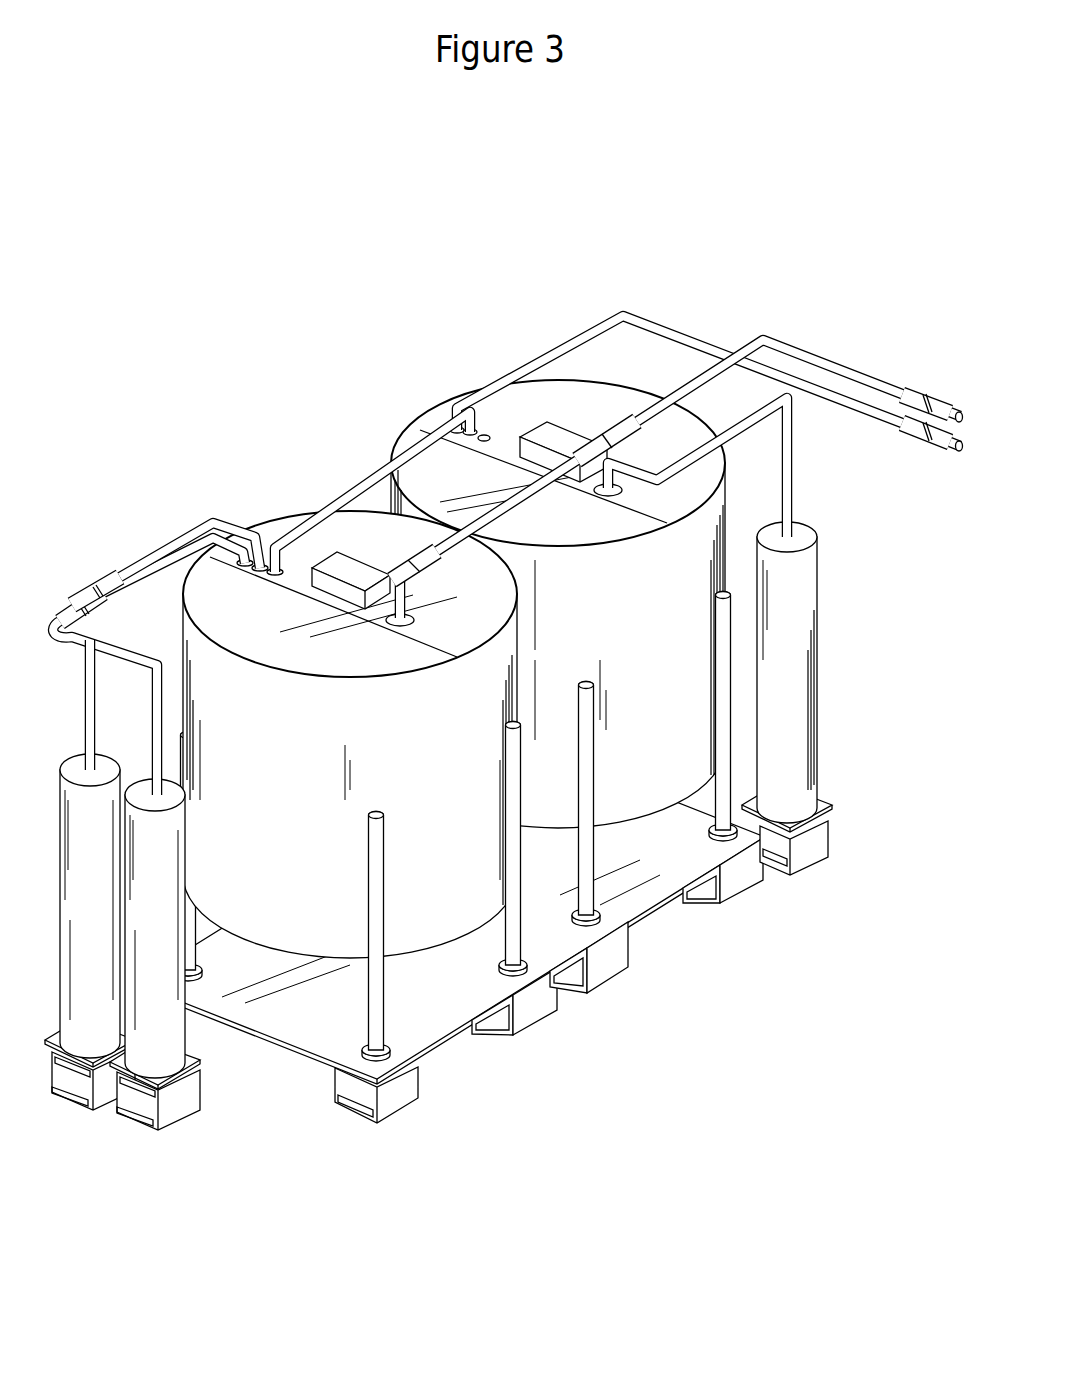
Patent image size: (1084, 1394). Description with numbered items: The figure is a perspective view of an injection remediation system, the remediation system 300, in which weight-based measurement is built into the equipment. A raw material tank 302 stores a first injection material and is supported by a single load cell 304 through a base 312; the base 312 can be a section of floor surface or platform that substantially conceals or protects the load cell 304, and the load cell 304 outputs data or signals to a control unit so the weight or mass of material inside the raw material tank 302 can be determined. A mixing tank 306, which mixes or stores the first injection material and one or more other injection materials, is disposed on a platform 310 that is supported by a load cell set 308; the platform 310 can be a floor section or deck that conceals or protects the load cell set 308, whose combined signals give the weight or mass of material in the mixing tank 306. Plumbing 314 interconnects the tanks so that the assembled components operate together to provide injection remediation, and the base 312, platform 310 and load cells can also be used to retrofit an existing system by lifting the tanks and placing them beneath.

The remediation system 300 is at (729, 147).
The raw material tank 302 is at (98, 1007).
The load cell 304 is at (88, 1088).
The mixing tank 306 is at (437, 920).
The load cell set 308 is at (372, 1128).
The platform 310 is at (338, 1042).
The base 312 is at (206, 1061).
The plumbing 314 is at (543, 355).